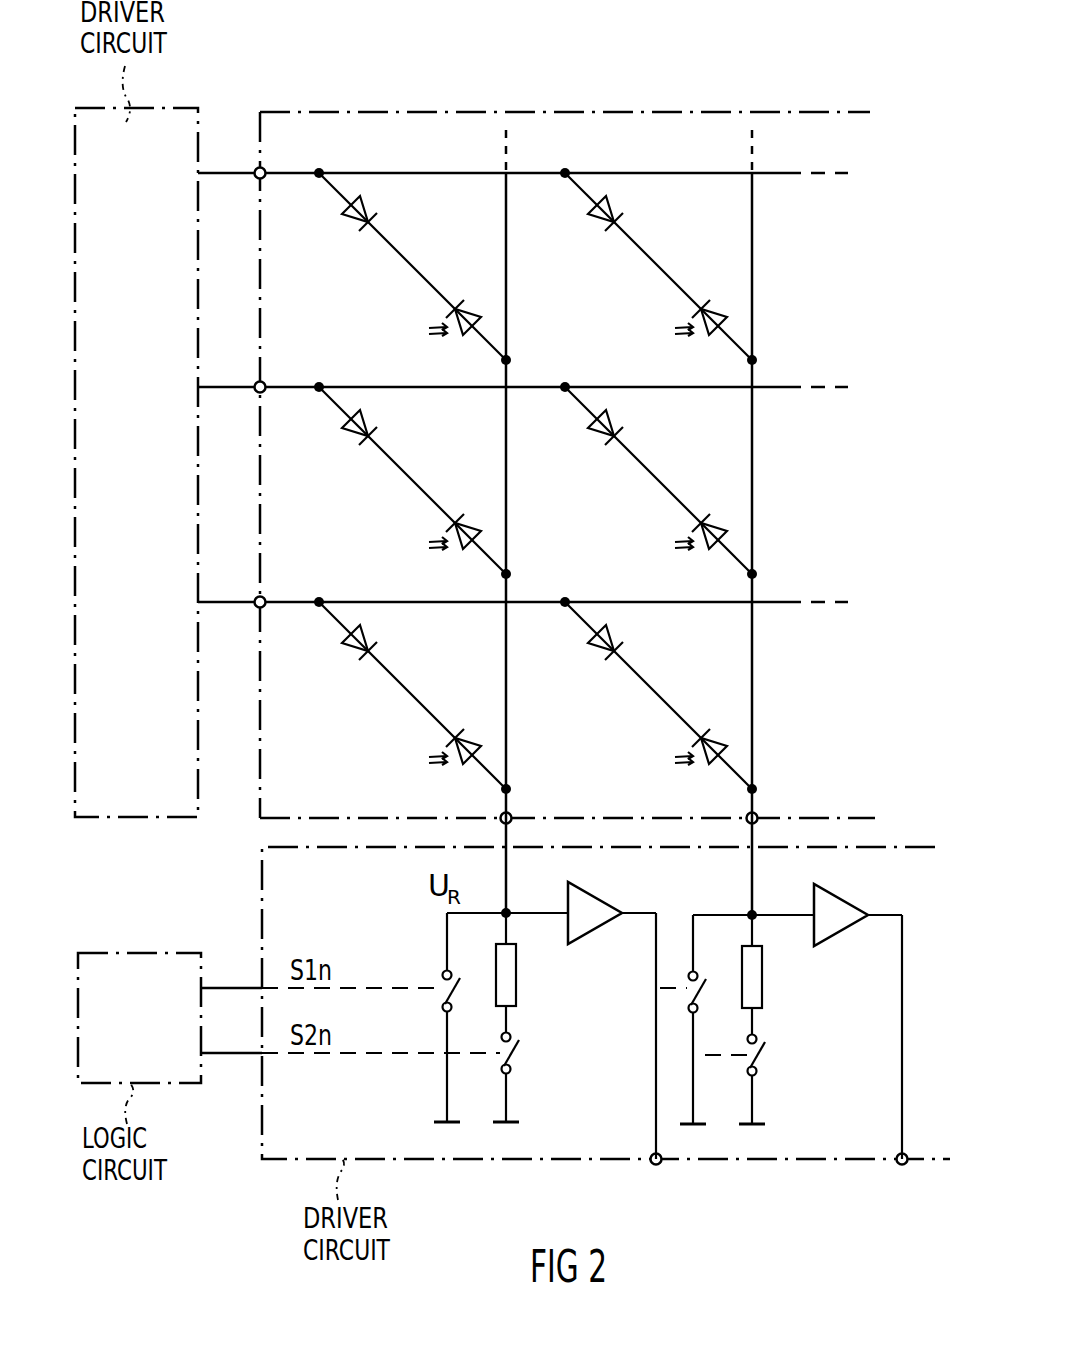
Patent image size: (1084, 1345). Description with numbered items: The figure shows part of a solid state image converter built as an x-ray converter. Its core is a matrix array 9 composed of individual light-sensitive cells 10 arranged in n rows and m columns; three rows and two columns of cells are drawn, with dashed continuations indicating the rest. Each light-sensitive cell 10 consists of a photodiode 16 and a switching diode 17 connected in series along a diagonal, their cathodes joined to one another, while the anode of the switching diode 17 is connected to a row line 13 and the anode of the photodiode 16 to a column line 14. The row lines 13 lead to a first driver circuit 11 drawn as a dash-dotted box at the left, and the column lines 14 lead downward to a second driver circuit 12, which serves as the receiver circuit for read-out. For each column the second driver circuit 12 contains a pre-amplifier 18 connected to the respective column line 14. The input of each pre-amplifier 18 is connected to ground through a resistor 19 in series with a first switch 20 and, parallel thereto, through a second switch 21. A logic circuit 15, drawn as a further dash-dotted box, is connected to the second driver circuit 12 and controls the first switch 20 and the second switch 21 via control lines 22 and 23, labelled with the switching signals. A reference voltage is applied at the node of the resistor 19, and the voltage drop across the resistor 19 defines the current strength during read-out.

The matrix array 9 is at (260, 470).
The light-sensitive cell 10 is at (735, 218).
The first driver circuit 11 is at (138, 819).
The second driver circuit 12 is at (262, 856).
The row line 13 is at (226, 604).
The column line 14 is at (755, 837).
The logic circuit 15 is at (157, 953).
The photodiode 16 is at (718, 316).
The switching diode 17 is at (596, 219).
The pre-amplifier 18 is at (598, 936).
The resistor 19 is at (518, 977).
The first switch 20 is at (521, 1047).
The second switch 21 is at (462, 983).
The control line 22 is at (230, 987).
The control line 23 is at (228, 1055).